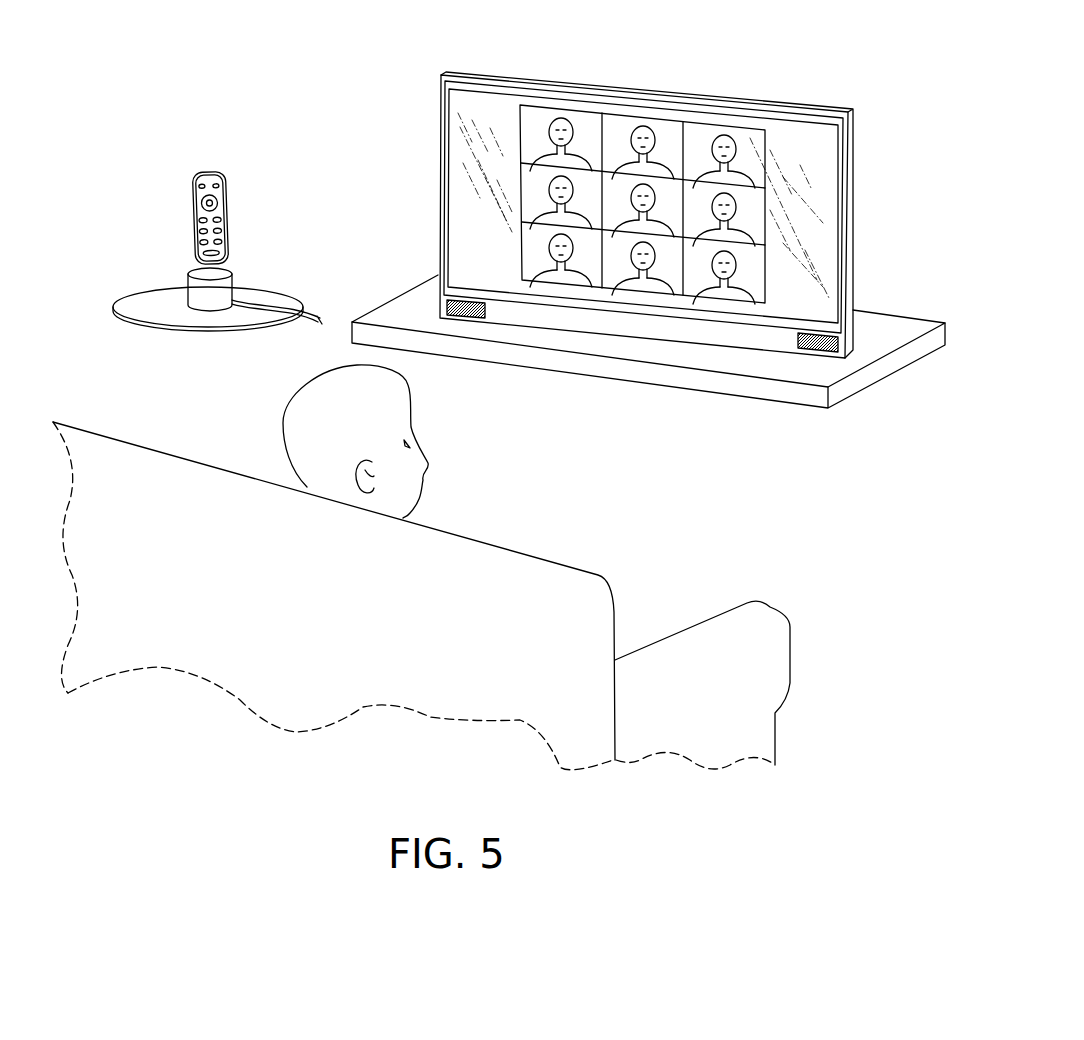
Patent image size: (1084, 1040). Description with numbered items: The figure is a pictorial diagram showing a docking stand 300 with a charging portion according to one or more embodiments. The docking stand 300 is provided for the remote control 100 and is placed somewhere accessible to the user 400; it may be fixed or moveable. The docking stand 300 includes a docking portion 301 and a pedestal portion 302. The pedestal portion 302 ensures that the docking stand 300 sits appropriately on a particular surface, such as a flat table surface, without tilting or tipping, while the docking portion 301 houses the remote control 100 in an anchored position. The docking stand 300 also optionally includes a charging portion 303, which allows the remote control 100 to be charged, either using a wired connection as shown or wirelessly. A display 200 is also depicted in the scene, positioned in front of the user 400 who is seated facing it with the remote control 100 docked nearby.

The remote control 100 is at (229, 240).
The display device 200 is at (643, 92).
The docking stand 300 is at (234, 277).
The docking portion 301 is at (192, 266).
The pedestal portion 302 is at (233, 293).
The charging portion 303 is at (323, 308).
The user 400 is at (662, 197).